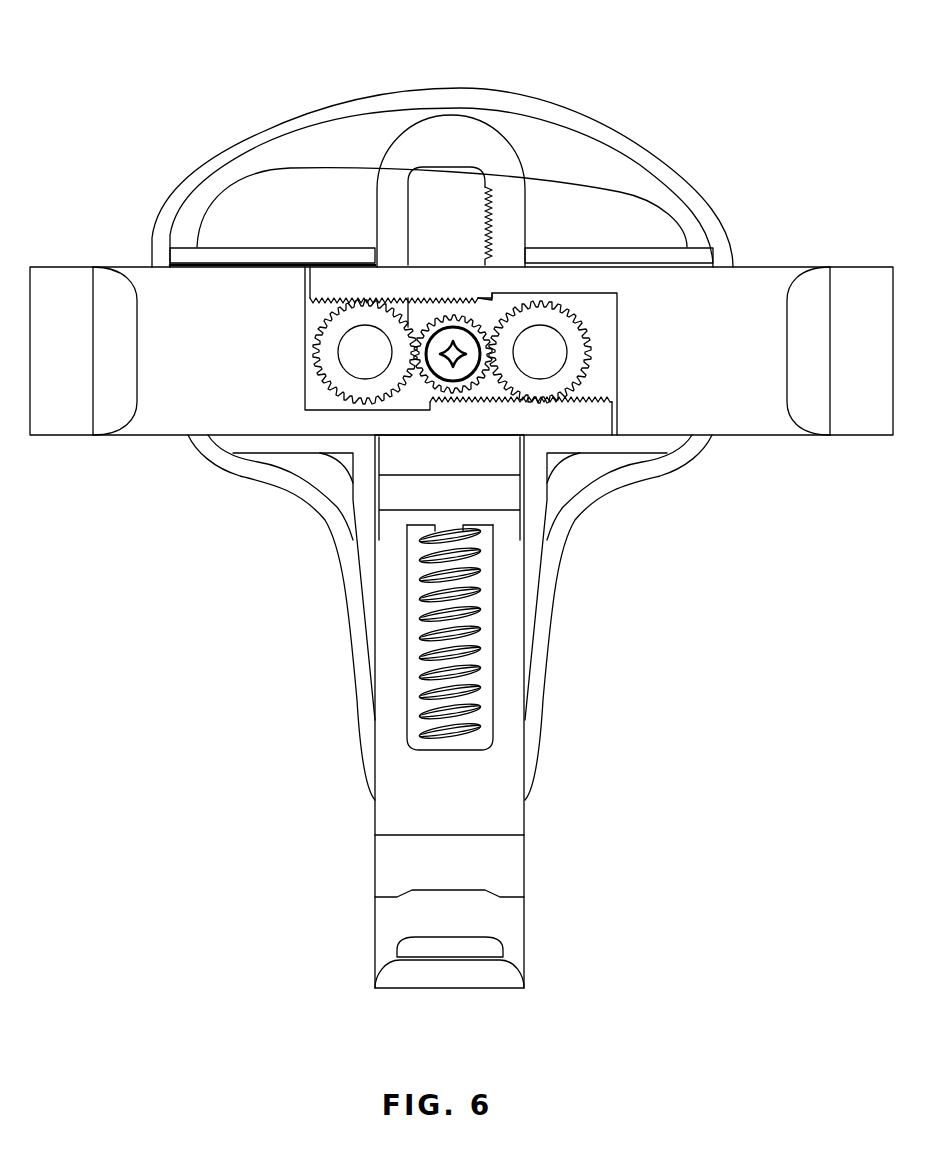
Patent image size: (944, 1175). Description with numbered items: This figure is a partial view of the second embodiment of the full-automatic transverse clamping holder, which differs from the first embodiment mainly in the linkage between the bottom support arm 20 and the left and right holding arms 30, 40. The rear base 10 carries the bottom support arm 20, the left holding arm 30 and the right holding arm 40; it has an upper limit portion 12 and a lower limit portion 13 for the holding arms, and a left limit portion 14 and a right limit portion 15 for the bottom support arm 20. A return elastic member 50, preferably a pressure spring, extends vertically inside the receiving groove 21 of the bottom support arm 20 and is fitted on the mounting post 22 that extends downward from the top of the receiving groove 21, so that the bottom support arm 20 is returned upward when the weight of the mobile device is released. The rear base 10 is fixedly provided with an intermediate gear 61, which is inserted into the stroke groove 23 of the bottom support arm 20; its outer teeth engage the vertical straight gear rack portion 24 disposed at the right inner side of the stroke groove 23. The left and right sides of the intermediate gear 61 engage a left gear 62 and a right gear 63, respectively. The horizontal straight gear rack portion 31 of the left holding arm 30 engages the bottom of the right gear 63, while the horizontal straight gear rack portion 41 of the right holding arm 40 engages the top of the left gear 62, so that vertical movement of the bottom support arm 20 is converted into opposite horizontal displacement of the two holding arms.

The rear base 10 is at (290, 175).
The upper limit portion 12 is at (283, 255).
The lower limit portion 13 is at (320, 443).
The left limit portion 14 is at (357, 497).
The right limit portion 15 is at (532, 510).
The bottom support arm 20 is at (490, 815).
The receiving groove 21 is at (487, 577).
The mounting post 22 is at (470, 617).
The stroke groove 23 is at (445, 202).
The vertical straight gear rack portion 24 is at (470, 318).
The left holding arm 30 is at (183, 388).
The horizontal straight gear rack portion 31 is at (587, 397).
The right holding arm 40 is at (757, 280).
The horizontal straight gear rack portion 41 is at (422, 298).
The return elastic member 50 is at (478, 678).
The intermediate gear 61 is at (480, 298).
The left gear 62 is at (375, 320).
The right gear 63 is at (578, 323).